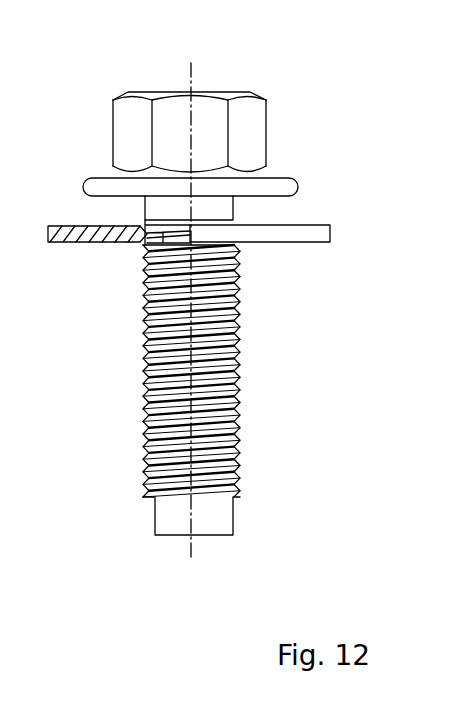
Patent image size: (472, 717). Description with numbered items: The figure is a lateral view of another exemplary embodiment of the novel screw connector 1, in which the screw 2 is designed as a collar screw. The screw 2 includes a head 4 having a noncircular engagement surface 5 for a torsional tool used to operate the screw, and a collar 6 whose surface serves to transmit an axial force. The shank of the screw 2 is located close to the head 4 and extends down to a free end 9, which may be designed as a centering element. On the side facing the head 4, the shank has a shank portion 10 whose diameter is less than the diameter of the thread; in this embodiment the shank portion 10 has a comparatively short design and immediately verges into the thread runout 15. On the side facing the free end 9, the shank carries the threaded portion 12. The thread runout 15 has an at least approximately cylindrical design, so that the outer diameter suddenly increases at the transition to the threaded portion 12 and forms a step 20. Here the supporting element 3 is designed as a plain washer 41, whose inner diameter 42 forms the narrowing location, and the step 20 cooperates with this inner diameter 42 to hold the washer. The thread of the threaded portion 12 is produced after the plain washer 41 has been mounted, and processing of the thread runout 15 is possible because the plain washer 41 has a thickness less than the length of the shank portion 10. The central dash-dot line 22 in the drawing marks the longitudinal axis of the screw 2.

The screw connector 1 is at (331, 103).
The screw 2 is at (270, 122).
The supporting element 3 is at (311, 216).
The head 4 is at (248, 112).
The noncircular engagement surface 5 is at (201, 115).
The collar 6 is at (271, 187).
The free end 9 is at (170, 523).
The shank portion 10 is at (219, 209).
The threaded portion 12 is at (125, 342).
The thread runout 15 is at (124, 253).
The step 20 is at (147, 225).
The longitudinal axis 22 is at (190, 80).
The plain washer 41 is at (317, 237).
The inner diameter 42 is at (146, 231).